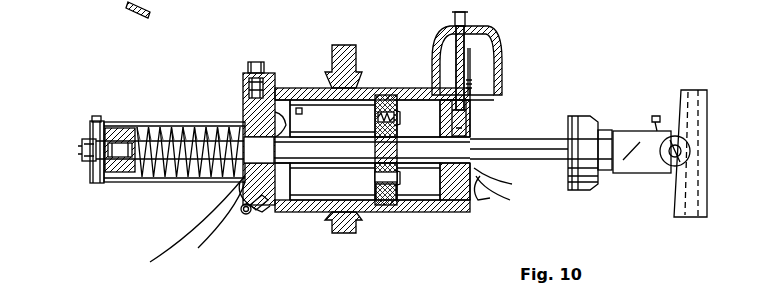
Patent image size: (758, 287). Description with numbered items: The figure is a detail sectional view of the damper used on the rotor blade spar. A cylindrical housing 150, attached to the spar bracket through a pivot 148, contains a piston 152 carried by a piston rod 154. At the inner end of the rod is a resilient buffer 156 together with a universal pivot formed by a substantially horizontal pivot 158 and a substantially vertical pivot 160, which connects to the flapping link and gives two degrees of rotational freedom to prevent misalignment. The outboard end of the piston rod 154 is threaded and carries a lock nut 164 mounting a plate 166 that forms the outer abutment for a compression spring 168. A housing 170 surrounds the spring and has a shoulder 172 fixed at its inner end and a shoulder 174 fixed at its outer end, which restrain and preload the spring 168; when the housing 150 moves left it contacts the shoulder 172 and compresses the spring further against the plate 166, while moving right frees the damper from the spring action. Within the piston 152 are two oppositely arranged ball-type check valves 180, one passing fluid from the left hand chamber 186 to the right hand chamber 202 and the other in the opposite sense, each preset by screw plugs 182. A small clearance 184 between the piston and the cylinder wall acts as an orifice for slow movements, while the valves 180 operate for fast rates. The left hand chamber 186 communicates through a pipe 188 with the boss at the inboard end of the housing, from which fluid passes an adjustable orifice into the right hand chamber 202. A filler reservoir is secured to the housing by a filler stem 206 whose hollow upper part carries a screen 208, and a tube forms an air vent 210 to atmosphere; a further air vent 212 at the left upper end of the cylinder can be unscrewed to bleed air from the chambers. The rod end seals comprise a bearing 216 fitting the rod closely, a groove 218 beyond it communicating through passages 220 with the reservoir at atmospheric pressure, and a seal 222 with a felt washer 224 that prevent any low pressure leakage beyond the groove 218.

The pivot 148 is at (348, 46).
The cylindrical housing 150 is at (326, 212).
The piston 152 is at (382, 96).
The piston rod 154 is at (195, 180).
The resilient buffer 156 is at (582, 116).
The horizontal pivot 158 is at (665, 166).
The vertical pivot 160 is at (684, 90).
The lock nut 164 is at (82, 150).
The plate 166 is at (90, 134).
The compression spring 168 is at (155, 124).
The housing 170 is at (208, 110).
The shoulder 172 is at (250, 100).
The shoulder 174 is at (94, 118).
The check valves 180 is at (378, 118).
The screw plugs 182 is at (378, 250).
The clearance 184 is at (410, 204).
The left hand chamber 186 is at (336, 194).
The pipe 188 is at (236, 222).
The right hand chamber 202 is at (436, 194).
The filler stem 206 is at (492, 48).
The screen 208 is at (468, 28).
The air vent 210 is at (495, 74).
The air vent 212 is at (270, 64).
The bearing 216 is at (292, 130).
The groove 218 is at (256, 232).
The passages 220 is at (480, 111).
The seal 222 is at (198, 248).
The felt washer 224 is at (150, 262).